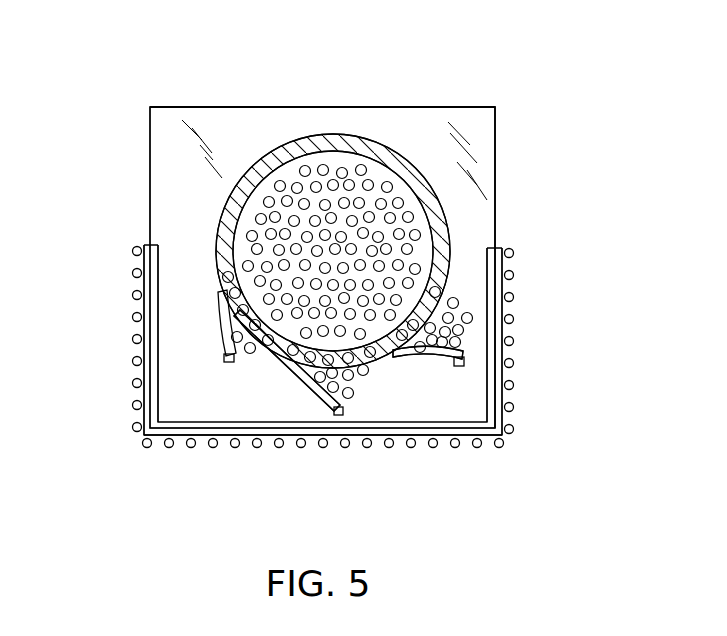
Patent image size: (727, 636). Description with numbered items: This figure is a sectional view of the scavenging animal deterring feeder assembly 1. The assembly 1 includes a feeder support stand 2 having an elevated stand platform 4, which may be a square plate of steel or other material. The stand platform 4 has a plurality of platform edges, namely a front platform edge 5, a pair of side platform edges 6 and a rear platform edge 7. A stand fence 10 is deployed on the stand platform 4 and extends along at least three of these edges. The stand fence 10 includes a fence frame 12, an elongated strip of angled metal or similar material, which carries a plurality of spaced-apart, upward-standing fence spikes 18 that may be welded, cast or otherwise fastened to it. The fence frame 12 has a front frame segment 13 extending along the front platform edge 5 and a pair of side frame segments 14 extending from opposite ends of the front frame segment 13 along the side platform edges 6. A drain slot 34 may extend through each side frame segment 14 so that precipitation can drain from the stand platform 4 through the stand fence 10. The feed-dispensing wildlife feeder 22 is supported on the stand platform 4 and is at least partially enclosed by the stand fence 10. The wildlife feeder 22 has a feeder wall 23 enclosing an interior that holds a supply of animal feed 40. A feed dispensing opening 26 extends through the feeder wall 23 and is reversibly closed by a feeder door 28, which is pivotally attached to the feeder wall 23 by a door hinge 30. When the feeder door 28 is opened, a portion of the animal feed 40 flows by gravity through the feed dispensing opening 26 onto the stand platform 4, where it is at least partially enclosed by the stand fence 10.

The assembly 1 is at (550, 26).
The feeder support stand 2 is at (168, 90).
The stand platform 4 is at (452, 100).
The front platform edge 5 is at (462, 362).
The side platform edge 6 is at (497, 127).
The rear platform edge 7 is at (403, 107).
The stand fence 10 is at (122, 425).
The fence frame 12 is at (181, 452).
The front frame segment 13 is at (384, 360).
The side frame segment 14 is at (144, 330).
The fence spike 18 is at (132, 385).
The feed-dispensing wildlife feeder 22 is at (293, 132).
The feeder wall 23 is at (367, 135).
The feed dispensing opening 26 is at (218, 237).
The feeder door 28 is at (222, 337).
The door hinge 30 is at (220, 284).
The drain slot 34 is at (133, 295).
The animal feed 40 is at (278, 148).